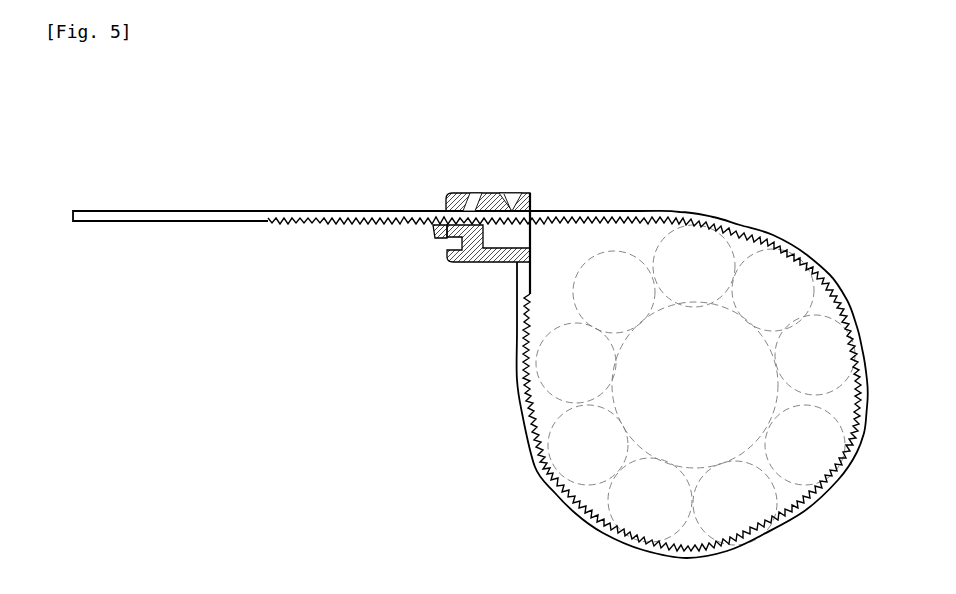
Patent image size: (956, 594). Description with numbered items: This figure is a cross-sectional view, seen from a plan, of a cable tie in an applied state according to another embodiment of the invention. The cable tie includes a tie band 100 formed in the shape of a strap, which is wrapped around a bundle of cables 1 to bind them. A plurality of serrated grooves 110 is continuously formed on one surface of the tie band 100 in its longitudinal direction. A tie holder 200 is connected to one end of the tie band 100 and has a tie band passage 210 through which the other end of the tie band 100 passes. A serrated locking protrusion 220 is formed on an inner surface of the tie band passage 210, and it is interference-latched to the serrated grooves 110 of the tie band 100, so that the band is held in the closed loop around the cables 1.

The cables 1 is at (542, 455).
The tie band 100 is at (288, 211).
The serrated grooves 110 is at (293, 224).
The tie holder 200 is at (441, 181).
The tie band passage 210 is at (503, 237).
The serrated locking protrusion 220 is at (434, 237).